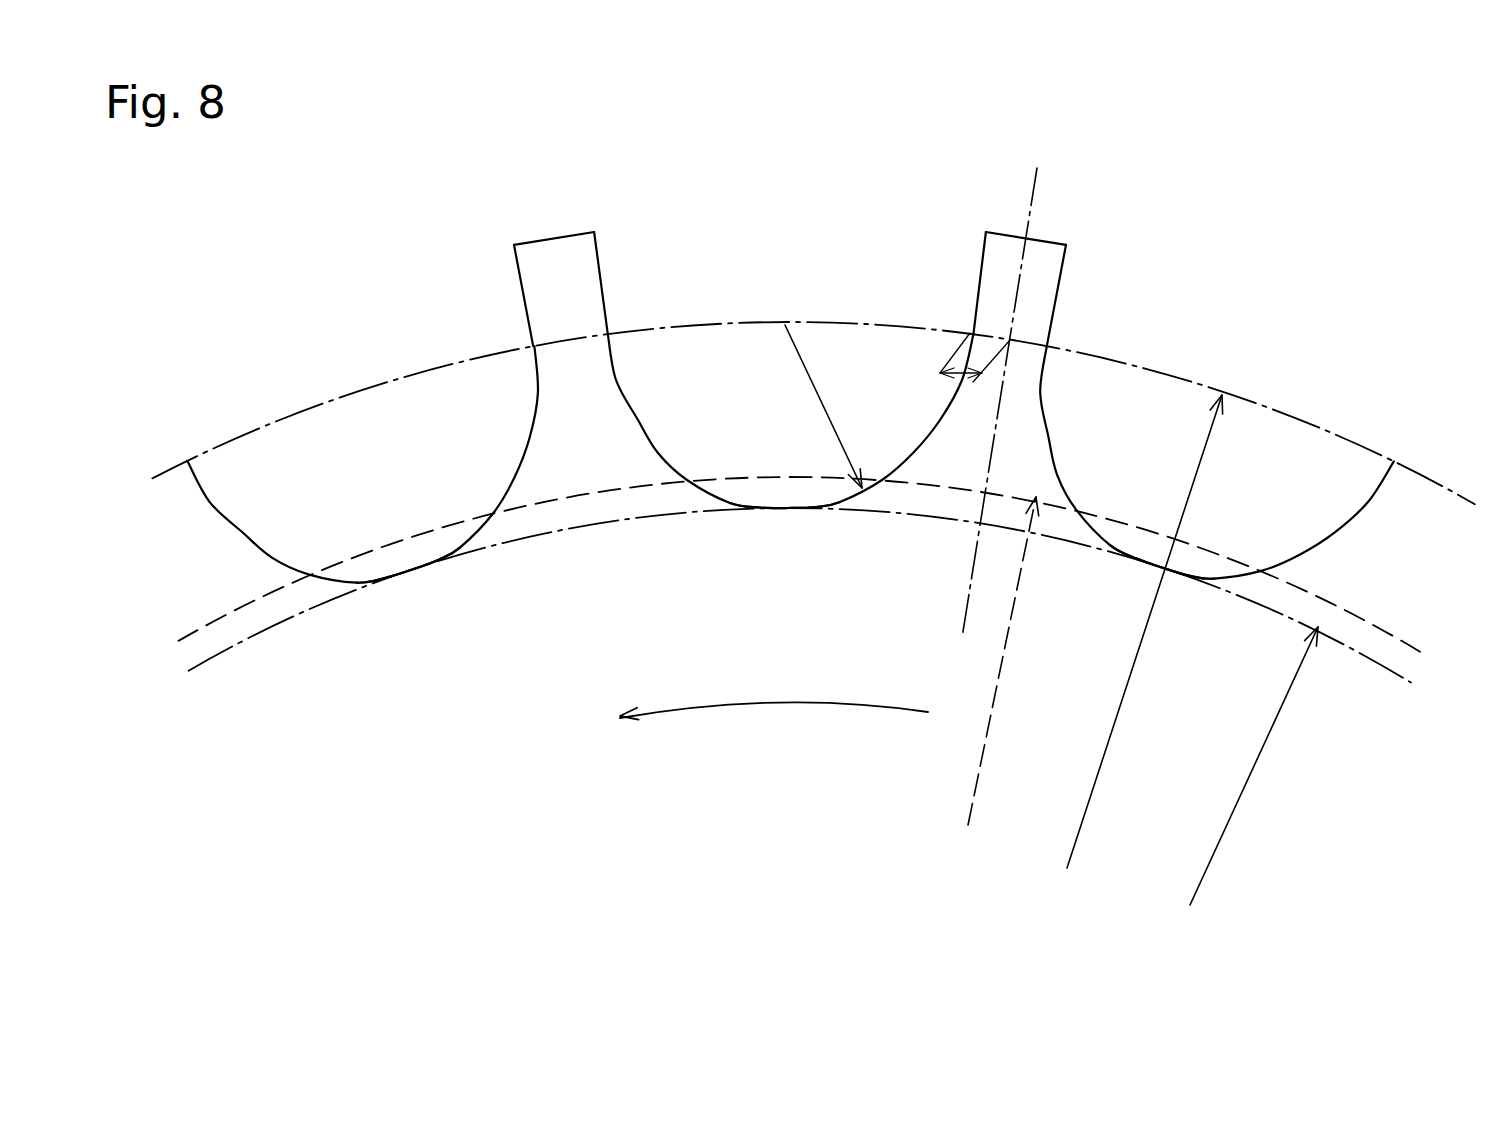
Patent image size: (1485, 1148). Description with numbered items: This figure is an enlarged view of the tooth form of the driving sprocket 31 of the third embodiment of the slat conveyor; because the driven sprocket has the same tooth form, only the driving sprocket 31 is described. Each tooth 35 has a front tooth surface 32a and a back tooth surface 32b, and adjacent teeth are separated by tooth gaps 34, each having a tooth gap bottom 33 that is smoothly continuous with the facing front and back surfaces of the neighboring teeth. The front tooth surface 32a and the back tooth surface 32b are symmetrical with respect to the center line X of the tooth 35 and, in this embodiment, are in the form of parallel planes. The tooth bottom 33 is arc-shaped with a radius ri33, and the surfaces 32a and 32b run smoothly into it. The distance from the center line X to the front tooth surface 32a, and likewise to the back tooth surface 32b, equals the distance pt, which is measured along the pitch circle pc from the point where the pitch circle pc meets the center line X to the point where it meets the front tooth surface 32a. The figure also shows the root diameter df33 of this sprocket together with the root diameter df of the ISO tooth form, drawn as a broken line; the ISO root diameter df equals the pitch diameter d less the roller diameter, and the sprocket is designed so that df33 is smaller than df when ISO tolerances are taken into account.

The driving sprocket 31 is at (480, 757).
The front tooth surface 32a is at (519, 278).
The back tooth surface 32b is at (597, 262).
The tooth gap bottom 33 is at (364, 578).
The tooth gap 34 is at (253, 432).
The tooth 35 is at (556, 238).
The center line of the tooth X is at (1005, 386).
The pitch circle pc is at (1303, 418).
The distance pt is at (940, 376).
The radius of the tooth bottom ri33 is at (822, 404).
The root diameter of the ISO tooth form df is at (992, 678).
The pitch diameter d is at (1140, 643).
The root diameter df33 is at (1238, 779).